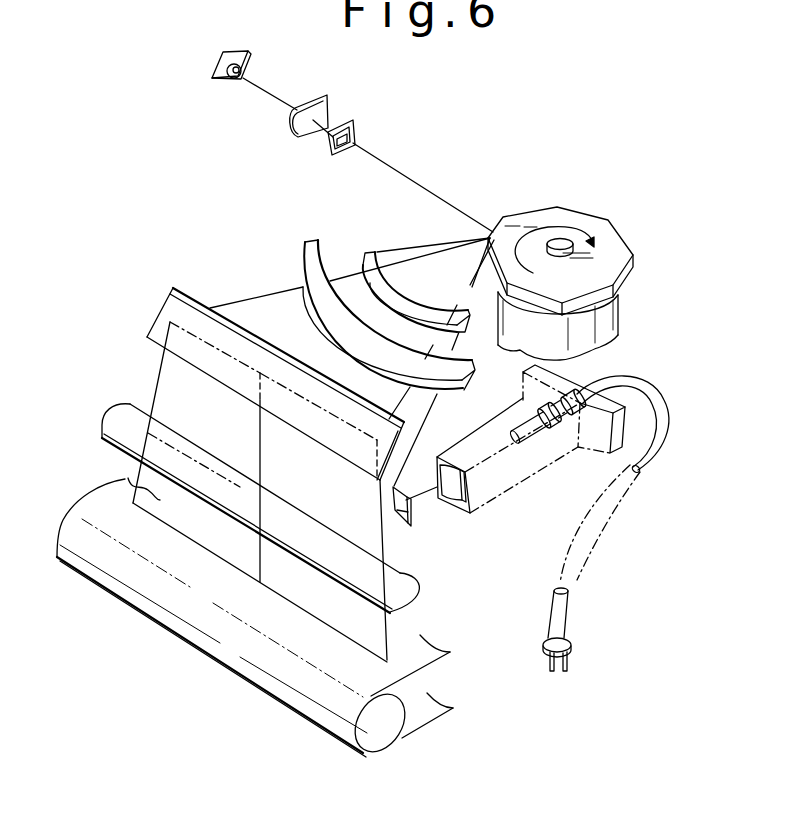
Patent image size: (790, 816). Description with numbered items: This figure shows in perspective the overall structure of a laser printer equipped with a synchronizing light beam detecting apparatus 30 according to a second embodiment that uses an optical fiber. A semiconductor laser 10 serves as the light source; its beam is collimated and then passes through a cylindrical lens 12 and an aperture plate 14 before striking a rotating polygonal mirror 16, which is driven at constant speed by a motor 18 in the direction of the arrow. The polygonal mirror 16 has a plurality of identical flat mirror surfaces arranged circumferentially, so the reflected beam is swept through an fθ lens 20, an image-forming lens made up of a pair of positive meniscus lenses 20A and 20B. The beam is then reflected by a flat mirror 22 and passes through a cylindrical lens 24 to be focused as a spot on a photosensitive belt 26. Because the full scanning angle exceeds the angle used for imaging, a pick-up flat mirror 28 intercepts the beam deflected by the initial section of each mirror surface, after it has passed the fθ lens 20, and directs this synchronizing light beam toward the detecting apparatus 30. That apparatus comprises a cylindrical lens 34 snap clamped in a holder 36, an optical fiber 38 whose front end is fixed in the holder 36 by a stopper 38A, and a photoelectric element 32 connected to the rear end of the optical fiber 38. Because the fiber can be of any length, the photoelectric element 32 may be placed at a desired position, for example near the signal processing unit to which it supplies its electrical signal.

The semiconductor laser 10 is at (247, 62).
The cylindrical lens 12 is at (328, 112).
The aperture plate 14 is at (350, 133).
The rotating polygonal mirror 16 is at (581, 217).
The motor 18 is at (618, 332).
The fθ lens 20 is at (445, 218).
The positive meniscus lens 20A is at (382, 255).
The positive meniscus lens 20B is at (307, 270).
The flat mirror 22 is at (179, 298).
The cylindrical lens 24 is at (400, 563).
The photosensitive belt 26 is at (423, 653).
The pick-up flat mirror 28 is at (409, 525).
The synchronizing light beam detecting apparatus 30 is at (737, 396).
The photoelectric element 32 is at (572, 645).
The cylindrical lens 34 is at (455, 508).
The holder 36 is at (597, 372).
The optical fiber 38 is at (657, 397).
The stopper 38A is at (572, 428).